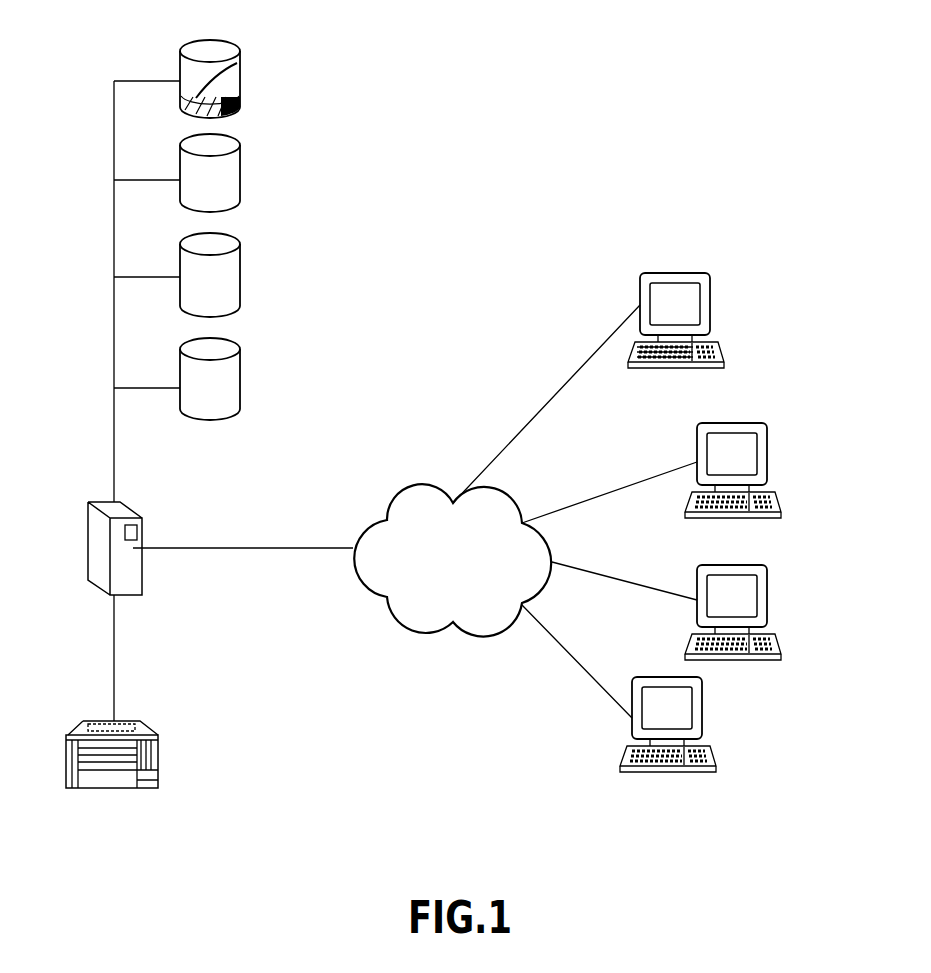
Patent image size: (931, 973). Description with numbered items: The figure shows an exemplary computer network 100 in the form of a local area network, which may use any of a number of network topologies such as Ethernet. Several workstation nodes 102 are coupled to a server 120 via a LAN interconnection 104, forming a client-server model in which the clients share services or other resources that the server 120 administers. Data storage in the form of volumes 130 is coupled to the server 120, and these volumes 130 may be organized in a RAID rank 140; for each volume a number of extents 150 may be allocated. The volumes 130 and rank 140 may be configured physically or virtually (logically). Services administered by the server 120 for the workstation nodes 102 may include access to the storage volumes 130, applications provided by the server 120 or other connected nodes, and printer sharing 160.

The computer network 100 is at (550, 138).
The workstation nodes 102 is at (710, 297).
The LAN interconnection 104 is at (435, 586).
The server 120 is at (127, 583).
The volume 130 is at (210, 379).
The RAID rank 140 is at (253, 221).
The extents 150 is at (240, 63).
The printer sharing 160 is at (150, 790).